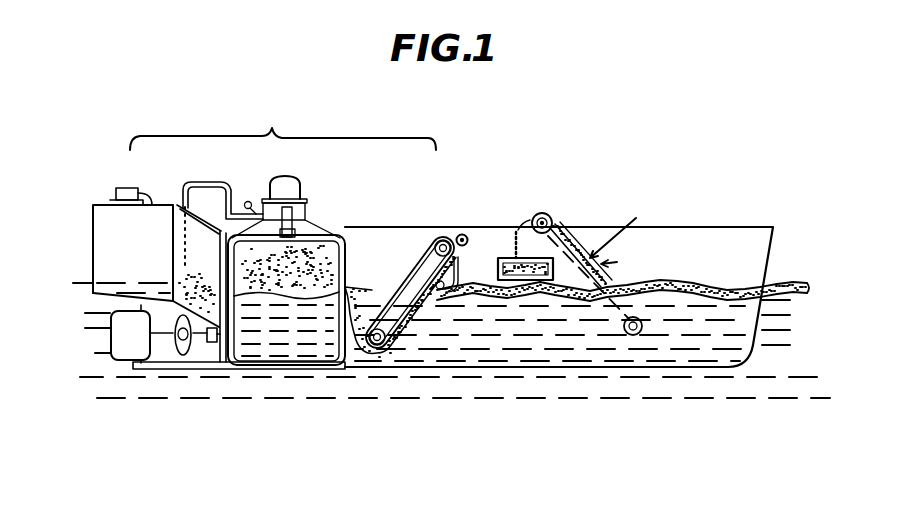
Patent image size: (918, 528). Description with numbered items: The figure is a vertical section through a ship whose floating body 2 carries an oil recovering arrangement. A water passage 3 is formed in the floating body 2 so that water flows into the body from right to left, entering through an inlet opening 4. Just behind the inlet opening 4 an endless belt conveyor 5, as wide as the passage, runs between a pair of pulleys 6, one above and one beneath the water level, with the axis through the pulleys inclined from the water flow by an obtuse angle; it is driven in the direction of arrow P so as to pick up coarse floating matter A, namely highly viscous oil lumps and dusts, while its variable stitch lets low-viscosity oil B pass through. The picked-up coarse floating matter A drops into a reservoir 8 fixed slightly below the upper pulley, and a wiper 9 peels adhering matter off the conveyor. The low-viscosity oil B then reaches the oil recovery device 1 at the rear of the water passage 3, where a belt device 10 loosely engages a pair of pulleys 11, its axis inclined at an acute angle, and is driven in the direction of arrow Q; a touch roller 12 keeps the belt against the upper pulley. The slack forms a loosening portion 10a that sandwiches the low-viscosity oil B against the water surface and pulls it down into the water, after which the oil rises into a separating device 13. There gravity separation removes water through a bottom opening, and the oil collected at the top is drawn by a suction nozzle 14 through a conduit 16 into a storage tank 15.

The oil recovery device 1 is at (284, 120).
The floating body 2 is at (673, 218).
The water passage 3 is at (716, 244).
The inlet opening 4 is at (771, 248).
The endless belt conveyor 5 is at (598, 238).
The pulleys 6 is at (556, 229).
The reservoir 8 is at (500, 262).
The wiper 9 is at (545, 214).
The belt device 10 is at (416, 260).
The loosening portion 10a is at (438, 303).
The pulleys 11 is at (447, 240).
The touch roller 12 is at (466, 236).
The separating device 13 is at (333, 236).
The suction nozzle 14 is at (326, 213).
The storage tank 15 is at (174, 206).
The conduit 16 is at (208, 182).
The coarse floating matter A is at (624, 228).
The low-viscosity oil B is at (577, 290).
The arrow P is at (616, 258).
The arrow Q is at (397, 279).